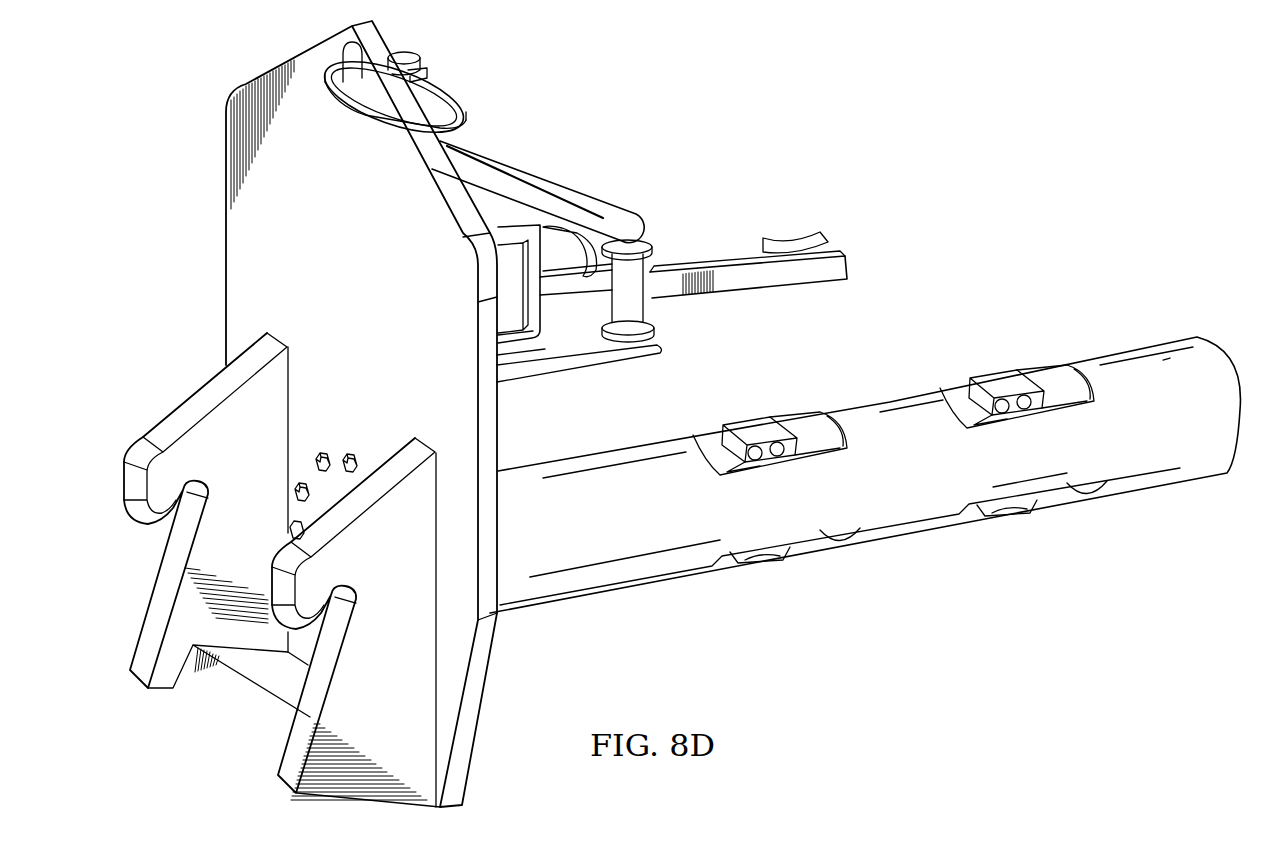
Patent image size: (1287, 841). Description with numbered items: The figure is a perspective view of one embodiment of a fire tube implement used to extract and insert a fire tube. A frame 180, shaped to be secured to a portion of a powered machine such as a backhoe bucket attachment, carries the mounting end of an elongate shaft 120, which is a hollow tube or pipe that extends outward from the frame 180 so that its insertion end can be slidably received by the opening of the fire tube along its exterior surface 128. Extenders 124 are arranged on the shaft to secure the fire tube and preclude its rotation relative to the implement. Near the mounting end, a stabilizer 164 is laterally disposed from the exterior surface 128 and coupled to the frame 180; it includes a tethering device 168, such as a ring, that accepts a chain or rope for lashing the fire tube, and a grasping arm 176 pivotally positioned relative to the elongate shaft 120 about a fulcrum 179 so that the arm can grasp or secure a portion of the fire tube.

The elongate shaft 120 is at (667, 598).
The extender 124 is at (751, 409).
The exterior surface 128 is at (600, 458).
The stabilizer 164 is at (500, 150).
The tethering device 168 is at (466, 84).
The grasping arm 176 is at (740, 287).
The fulcrum 179 is at (650, 307).
The frame 180 is at (478, 683).